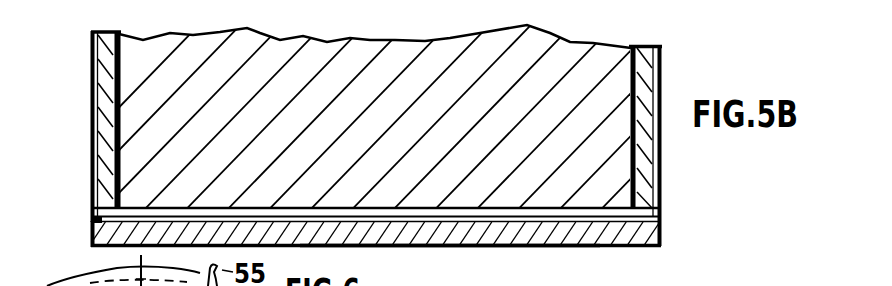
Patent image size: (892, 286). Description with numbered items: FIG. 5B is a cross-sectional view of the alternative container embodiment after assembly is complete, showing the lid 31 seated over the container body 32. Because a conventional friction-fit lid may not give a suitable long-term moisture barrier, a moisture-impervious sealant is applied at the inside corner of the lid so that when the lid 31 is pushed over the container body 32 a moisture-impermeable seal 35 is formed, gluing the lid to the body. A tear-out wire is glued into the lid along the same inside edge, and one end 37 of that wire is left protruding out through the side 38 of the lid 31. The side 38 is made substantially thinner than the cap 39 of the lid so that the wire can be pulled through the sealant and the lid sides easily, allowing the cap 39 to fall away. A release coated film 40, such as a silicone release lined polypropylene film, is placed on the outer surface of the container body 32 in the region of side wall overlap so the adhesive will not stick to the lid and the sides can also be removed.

The lid 31 is at (624, 248).
The container body 32 is at (645, 46).
The moisture-impermeable seal 35 is at (670, 209).
The end of wire 37 is at (93, 217).
The side of lid 38 is at (94, 204).
The cap of lid 39 is at (448, 248).
The release coated film 40 is at (94, 33).